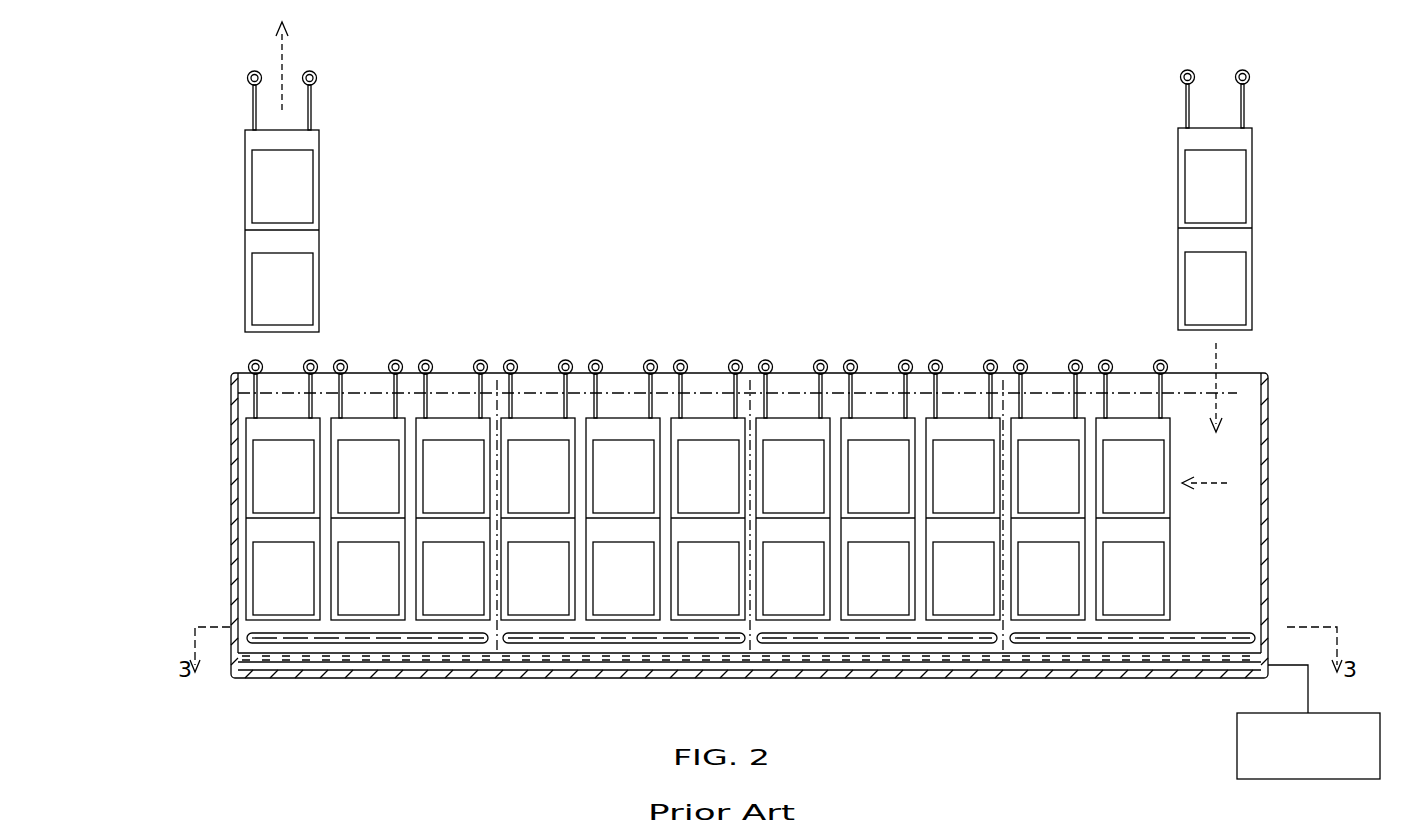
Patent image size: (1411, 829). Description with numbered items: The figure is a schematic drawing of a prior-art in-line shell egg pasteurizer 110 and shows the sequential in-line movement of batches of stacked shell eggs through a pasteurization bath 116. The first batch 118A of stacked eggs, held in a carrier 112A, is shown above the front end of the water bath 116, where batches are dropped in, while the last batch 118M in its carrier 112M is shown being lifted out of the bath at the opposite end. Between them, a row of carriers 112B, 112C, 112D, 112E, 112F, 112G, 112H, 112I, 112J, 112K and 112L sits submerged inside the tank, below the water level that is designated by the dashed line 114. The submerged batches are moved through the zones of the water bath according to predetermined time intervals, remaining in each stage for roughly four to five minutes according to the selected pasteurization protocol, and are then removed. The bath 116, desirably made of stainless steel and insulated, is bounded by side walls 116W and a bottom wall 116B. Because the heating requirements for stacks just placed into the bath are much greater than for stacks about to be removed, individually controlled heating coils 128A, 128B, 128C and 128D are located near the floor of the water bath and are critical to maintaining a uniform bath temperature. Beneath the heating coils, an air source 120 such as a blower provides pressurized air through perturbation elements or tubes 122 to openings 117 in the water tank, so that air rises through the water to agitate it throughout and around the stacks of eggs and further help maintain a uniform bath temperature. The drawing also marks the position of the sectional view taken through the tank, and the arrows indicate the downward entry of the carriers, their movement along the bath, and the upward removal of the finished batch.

The in-line shell egg pasteurizer 110 is at (1283, 50).
The carrier 112A is at (244, 201).
The carrier 112B is at (283, 478).
The carrier 112C is at (368, 478).
The carrier 112D is at (453, 478).
The carrier 112E is at (538, 478).
The carrier 112F is at (623, 478).
The carrier 112G is at (708, 478).
The carrier 112H is at (793, 478).
The carrier 112I is at (878, 478).
The carrier 112J is at (963, 478).
The carrier 112K is at (1048, 478).
The carrier 112L is at (1133, 478).
The carrier 112M is at (1258, 200).
The batch of stacked shell eggs 118A is at (243, 101).
The batch of stacked shell eggs 118M is at (1259, 102).
The water level 114 is at (1238, 391).
The pasteurization bath 116 is at (769, 563).
The side wall 116W is at (1268, 422).
The bottom wall 116B is at (1210, 655).
The openings 117 is at (267, 663).
The perturbation tubes 122 is at (1130, 667).
The air source 120 is at (1237, 765).
The heating coil 128A is at (1045, 643).
The heating coil 128B is at (932, 643).
The heating coil 128C is at (677, 643).
The heating coil 128D is at (425, 643).